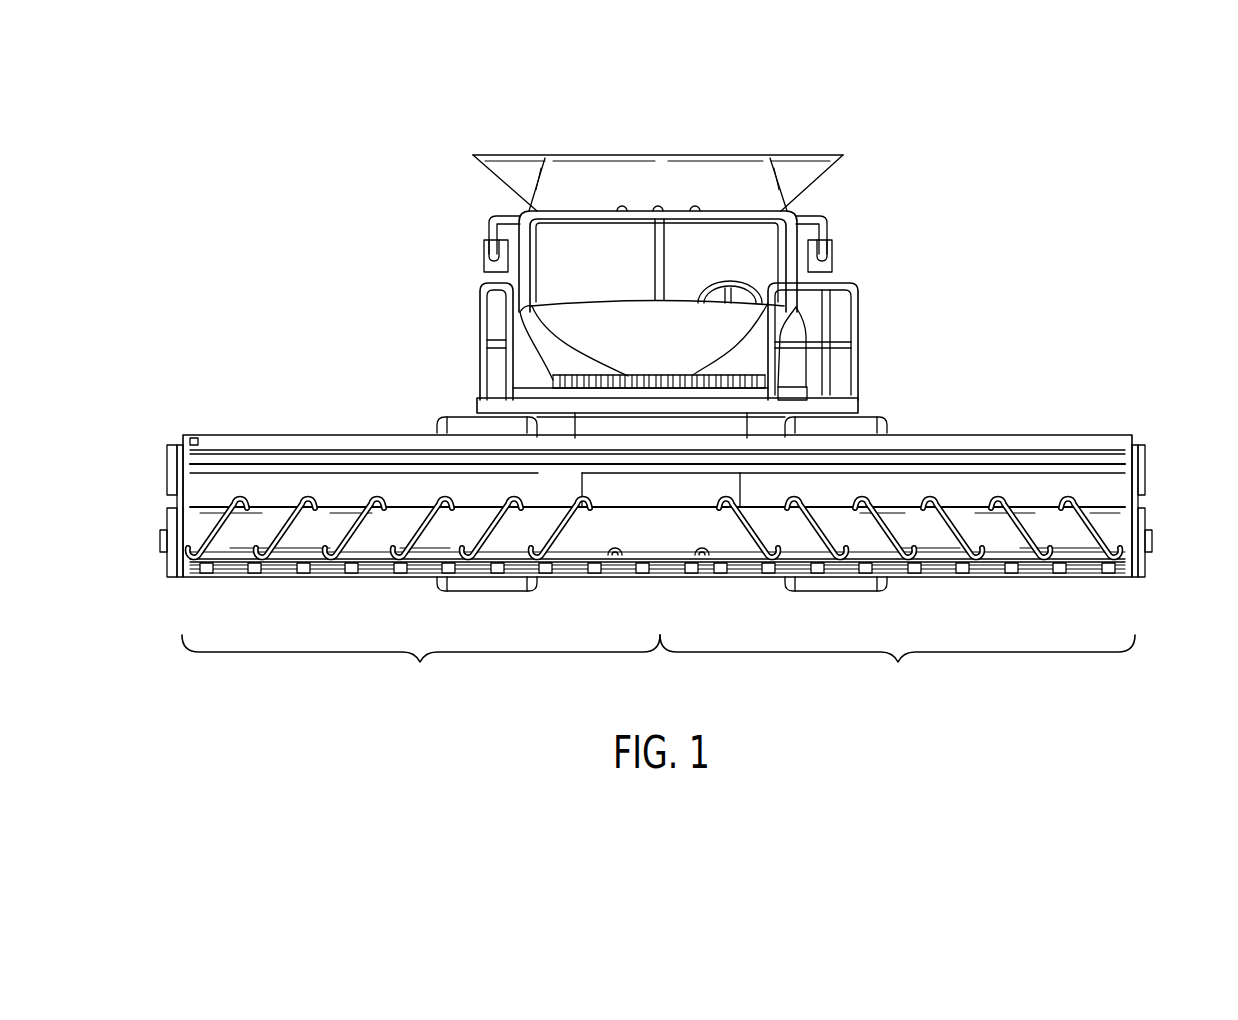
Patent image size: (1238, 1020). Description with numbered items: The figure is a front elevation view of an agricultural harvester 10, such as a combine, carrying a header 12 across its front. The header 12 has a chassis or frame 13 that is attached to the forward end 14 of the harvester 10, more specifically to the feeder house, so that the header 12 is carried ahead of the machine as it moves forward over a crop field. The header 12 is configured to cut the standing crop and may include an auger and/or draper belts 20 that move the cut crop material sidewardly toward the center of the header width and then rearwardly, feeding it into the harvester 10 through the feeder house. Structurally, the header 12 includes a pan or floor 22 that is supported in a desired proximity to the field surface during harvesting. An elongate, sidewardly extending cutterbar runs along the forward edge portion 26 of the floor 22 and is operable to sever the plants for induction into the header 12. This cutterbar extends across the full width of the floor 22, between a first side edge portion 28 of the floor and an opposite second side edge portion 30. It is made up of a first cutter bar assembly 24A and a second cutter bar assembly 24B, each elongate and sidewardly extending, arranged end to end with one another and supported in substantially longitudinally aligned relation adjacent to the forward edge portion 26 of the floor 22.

The agricultural harvester 10 is at (316, 178).
The header 12 is at (189, 392).
The chassis or frame 13 is at (163, 473).
The forward end 14 is at (485, 405).
The auger and/or draper belts 20 is at (1117, 527).
The pan or floor 22 is at (306, 558).
The first cutter bar assembly 24A is at (421, 664).
The second cutter bar assembly 24B is at (897, 664).
The forward edge portion 26 is at (232, 558).
The first side edge portion 28 is at (180, 556).
The second side edge portion 30 is at (1148, 562).